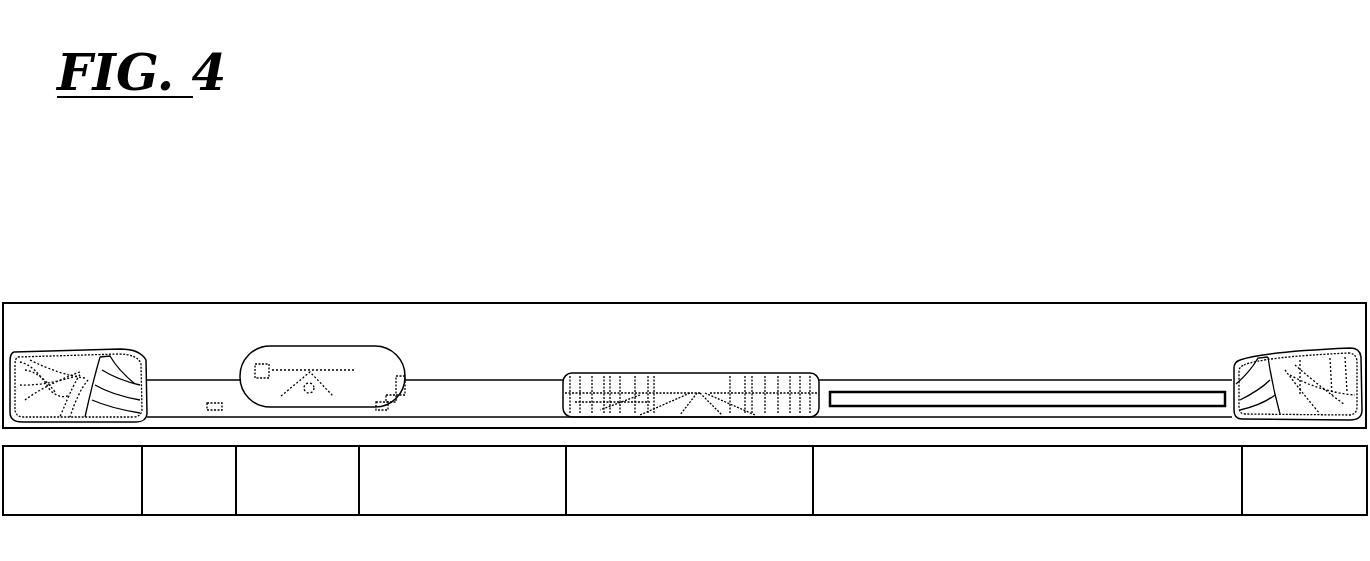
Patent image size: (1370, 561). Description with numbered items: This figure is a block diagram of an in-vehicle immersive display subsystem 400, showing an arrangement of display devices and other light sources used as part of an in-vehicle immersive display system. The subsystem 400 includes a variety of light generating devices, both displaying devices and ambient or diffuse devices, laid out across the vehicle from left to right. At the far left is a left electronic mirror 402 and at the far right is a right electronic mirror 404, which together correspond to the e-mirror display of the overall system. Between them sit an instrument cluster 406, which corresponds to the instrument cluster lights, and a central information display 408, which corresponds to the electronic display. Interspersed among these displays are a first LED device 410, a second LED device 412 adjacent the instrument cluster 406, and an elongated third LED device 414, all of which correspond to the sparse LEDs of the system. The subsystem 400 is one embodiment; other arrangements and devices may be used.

The in-vehicle immersive display subsystem 400 is at (808, 89).
The left electronic mirror 402 is at (36, 356).
The right electronic mirror 404 is at (1236, 368).
The instrument cluster 406 is at (395, 349).
The central information display 408 is at (729, 374).
The first LED device 410 is at (207, 403).
The second LED device 412 is at (386, 407).
The third LED device 414 is at (949, 392).